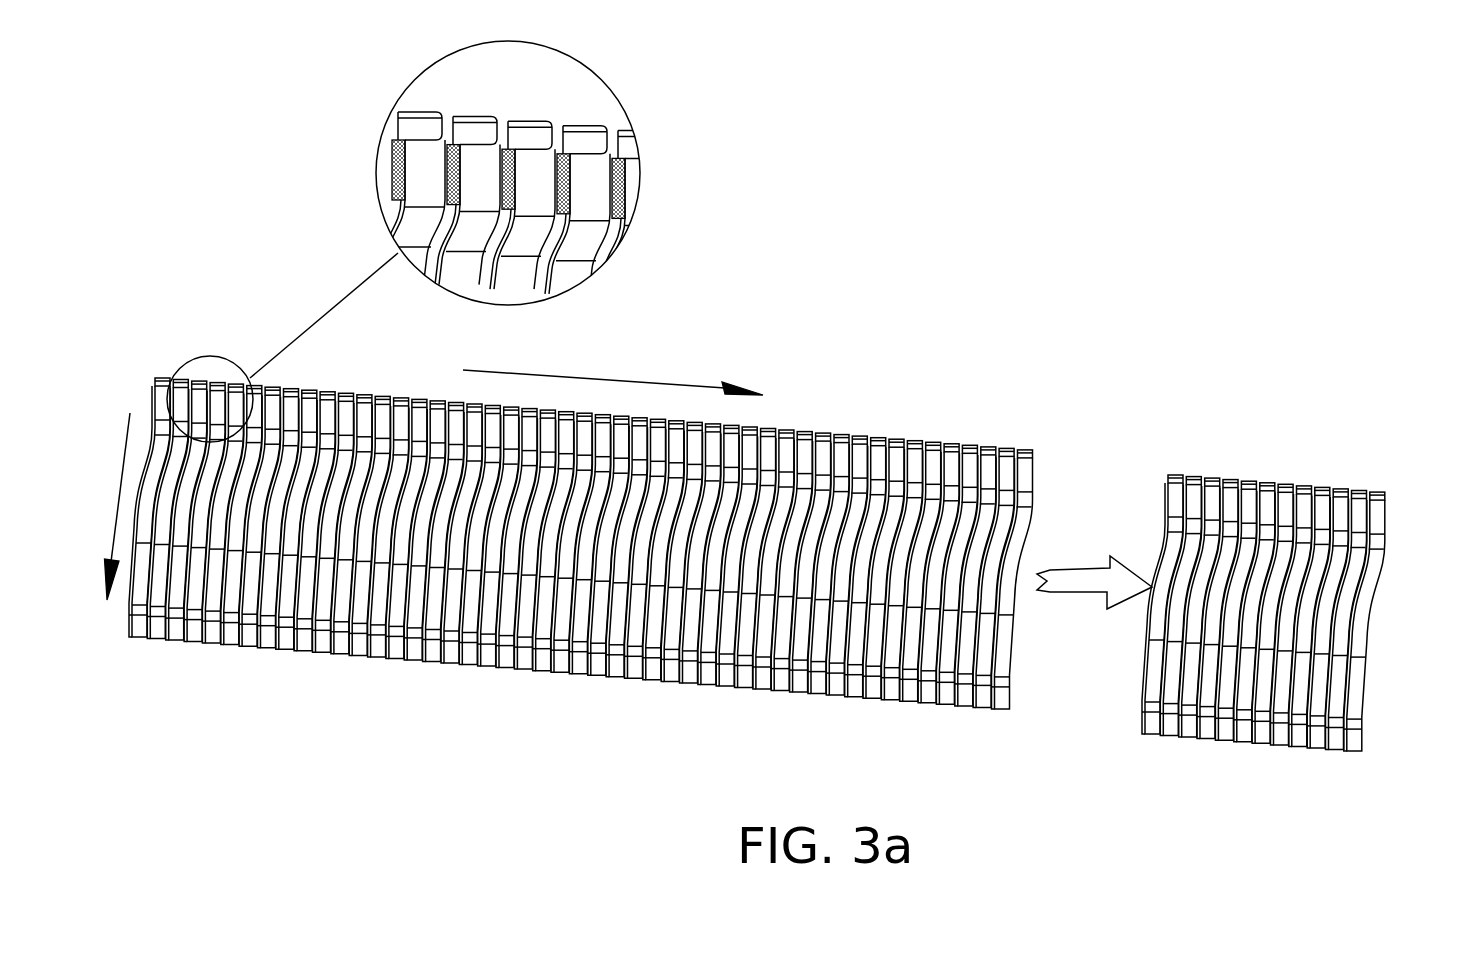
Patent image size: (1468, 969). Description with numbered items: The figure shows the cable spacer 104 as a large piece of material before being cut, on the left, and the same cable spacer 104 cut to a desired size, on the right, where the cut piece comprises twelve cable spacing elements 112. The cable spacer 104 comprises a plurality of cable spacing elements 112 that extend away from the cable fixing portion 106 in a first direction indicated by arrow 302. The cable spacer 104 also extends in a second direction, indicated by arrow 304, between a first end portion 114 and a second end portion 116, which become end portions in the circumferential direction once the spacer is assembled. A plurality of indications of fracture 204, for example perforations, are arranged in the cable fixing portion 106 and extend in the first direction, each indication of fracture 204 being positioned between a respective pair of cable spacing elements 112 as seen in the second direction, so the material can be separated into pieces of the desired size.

The cable spacer 104 is at (784, 564).
The cable fixing portion 106 is at (788, 447).
The cable spacing element 112 is at (377, 643).
The first end portion 114 is at (158, 403).
The second end portion 116 is at (1048, 468).
The indication of fracture 204 is at (933, 457).
The arrow indicating first direction 302 is at (117, 490).
The arrow indicating second direction 304 is at (603, 380).